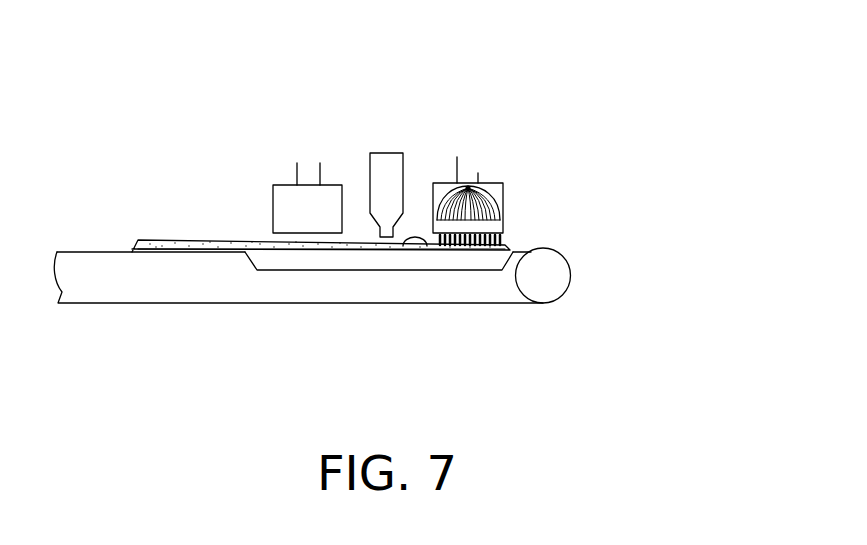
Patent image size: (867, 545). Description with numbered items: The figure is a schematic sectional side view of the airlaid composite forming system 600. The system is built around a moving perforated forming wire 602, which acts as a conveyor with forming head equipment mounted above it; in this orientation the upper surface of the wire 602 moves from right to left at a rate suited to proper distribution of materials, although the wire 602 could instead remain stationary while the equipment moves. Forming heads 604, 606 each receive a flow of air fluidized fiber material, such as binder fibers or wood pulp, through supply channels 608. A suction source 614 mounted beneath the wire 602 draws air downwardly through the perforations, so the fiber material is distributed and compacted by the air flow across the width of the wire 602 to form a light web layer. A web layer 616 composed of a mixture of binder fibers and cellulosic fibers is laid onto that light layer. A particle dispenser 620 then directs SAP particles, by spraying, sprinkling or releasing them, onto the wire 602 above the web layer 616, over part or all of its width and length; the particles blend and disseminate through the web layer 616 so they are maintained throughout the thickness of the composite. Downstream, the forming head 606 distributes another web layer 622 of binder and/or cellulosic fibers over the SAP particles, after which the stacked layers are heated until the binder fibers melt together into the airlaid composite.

The airlaid composite forming system 600 is at (632, 85).
The perforated forming wire 602 is at (527, 248).
The forming head 604 is at (505, 200).
The forming head 606 is at (288, 212).
The supply channel 608 is at (468, 176).
The suction source 614 is at (485, 262).
The web layer 616 is at (403, 240).
The particle dispenser 620 is at (393, 202).
The web layer 622 is at (193, 237).